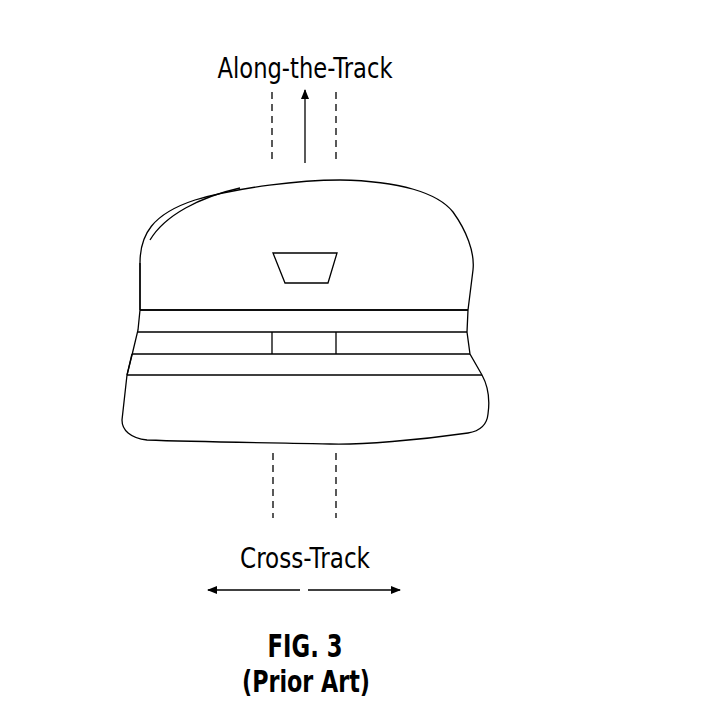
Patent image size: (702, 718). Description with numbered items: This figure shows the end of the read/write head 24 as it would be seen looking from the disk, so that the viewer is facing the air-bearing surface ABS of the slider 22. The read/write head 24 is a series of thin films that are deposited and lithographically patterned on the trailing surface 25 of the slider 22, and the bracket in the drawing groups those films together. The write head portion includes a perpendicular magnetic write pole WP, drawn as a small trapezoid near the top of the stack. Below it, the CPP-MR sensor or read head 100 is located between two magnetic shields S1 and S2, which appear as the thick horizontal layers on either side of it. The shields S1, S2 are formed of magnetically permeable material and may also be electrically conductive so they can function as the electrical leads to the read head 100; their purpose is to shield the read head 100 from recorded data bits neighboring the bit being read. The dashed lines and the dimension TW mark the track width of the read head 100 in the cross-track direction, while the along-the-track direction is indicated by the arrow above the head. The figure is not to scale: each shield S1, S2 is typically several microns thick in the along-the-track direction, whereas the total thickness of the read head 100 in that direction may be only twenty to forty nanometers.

The slider 22 is at (153, 435).
The read/write head 24 is at (83, 252).
The trailing surface 25 is at (135, 373).
The CPP-MR sensor or read head 100 is at (325, 345).
The magnetic shield S1 is at (190, 372).
The magnetic shield S2 is at (460, 322).
The perpendicular magnetic write pole WP is at (332, 273).
The air bearing surface ABS is at (195, 212).
The track width TW is at (398, 498).